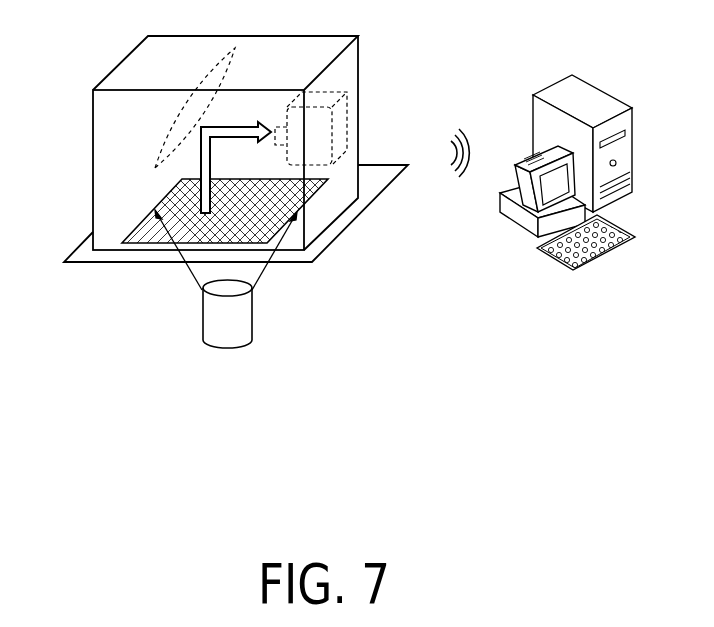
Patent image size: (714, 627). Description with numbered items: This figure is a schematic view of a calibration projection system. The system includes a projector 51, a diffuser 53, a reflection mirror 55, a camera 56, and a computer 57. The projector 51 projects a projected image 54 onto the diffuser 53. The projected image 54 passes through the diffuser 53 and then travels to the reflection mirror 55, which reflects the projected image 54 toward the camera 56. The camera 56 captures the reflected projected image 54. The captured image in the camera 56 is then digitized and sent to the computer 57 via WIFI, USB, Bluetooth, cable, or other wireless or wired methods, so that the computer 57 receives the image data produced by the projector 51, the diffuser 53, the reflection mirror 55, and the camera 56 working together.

The projector 51 is at (235, 320).
The diffuser 53 is at (133, 248).
The projected image 54 is at (208, 247).
The reflection mirror 55 is at (172, 116).
The camera 56 is at (347, 86).
The computer 57 is at (585, 100).